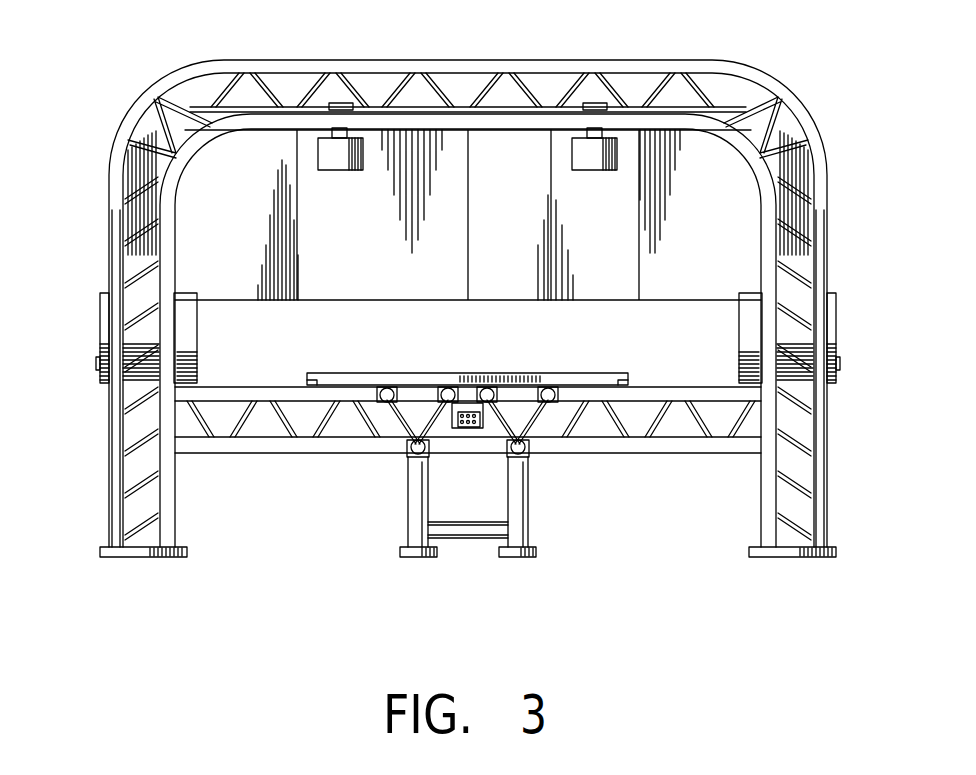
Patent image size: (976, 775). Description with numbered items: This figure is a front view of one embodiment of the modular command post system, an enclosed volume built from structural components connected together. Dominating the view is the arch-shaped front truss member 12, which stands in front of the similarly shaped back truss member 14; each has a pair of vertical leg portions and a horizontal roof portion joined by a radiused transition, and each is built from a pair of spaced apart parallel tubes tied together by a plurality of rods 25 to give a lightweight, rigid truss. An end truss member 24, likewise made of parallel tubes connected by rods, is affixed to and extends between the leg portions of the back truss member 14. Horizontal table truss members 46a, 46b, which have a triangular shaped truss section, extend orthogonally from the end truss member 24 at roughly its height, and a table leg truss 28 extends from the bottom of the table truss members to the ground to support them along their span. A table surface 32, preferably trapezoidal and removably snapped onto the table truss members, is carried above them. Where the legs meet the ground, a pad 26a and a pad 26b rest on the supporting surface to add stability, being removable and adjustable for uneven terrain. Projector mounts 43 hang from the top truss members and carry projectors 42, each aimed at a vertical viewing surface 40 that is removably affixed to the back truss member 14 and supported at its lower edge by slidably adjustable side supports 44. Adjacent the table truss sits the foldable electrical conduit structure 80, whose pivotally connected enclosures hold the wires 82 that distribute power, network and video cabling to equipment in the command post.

The front truss member 12 is at (481, 303).
The back truss member 14 is at (773, 100).
The end truss member 24 is at (653, 440).
The rods 25 is at (232, 90).
The pad 26a is at (120, 557).
The pad 26b is at (795, 557).
The table leg truss 28 is at (517, 490).
The table surface 32 is at (540, 372).
The vertical viewing surface 40 is at (233, 242).
The projector 42 is at (331, 166).
The projector mount 43 is at (340, 104).
The side support 44 is at (97, 318).
The horizontal table truss member 46a is at (510, 387).
The horizontal table truss member 46b is at (412, 400).
The foldable electrical conduit structure 80 is at (440, 447).
The wires 82 is at (471, 428).